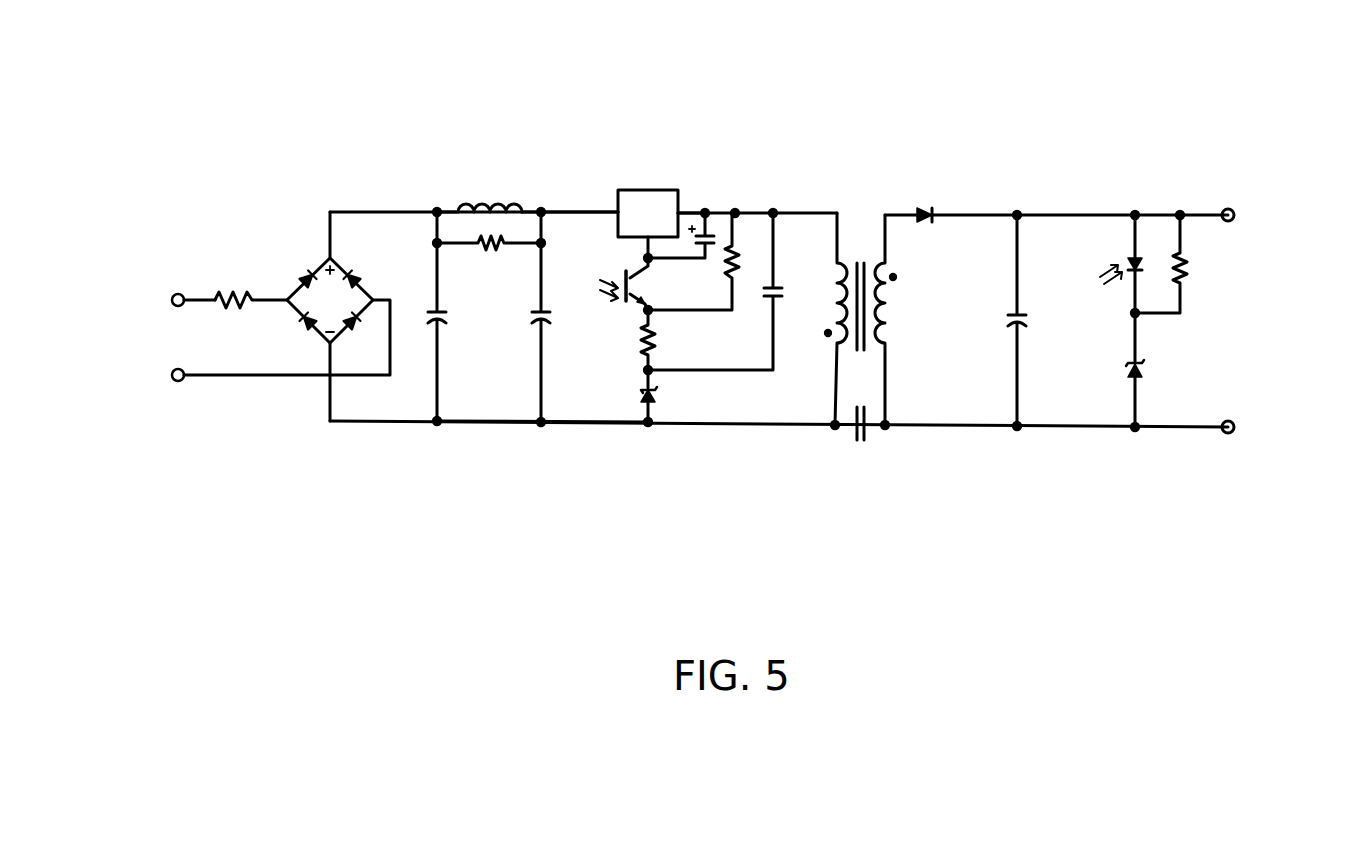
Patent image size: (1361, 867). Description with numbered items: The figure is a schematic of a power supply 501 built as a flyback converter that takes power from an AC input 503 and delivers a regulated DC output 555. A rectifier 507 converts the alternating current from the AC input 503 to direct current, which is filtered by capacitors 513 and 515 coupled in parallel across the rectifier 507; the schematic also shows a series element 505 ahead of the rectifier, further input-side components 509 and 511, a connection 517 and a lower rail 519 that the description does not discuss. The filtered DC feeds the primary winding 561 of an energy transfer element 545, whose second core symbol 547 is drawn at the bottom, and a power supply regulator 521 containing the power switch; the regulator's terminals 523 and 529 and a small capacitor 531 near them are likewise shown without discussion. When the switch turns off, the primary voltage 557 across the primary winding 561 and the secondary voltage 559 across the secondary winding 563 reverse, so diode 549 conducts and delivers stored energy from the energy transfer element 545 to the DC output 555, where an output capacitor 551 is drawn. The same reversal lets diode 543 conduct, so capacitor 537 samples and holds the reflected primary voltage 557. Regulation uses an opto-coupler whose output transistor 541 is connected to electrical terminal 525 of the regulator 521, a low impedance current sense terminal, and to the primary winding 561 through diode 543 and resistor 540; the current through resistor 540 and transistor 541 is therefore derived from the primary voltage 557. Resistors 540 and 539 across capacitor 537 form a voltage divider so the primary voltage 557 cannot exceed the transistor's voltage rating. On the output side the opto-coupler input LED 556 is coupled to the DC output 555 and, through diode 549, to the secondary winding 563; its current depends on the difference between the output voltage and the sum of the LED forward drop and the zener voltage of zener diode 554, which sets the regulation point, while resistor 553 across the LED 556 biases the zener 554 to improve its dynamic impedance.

The power supply 501 is at (1258, 57).
The AC input 503 is at (120, 308).
The input resistor 505 is at (225, 295).
The rectifier 507 is at (307, 262).
The inductor 509 is at (468, 205).
The resistor 511 is at (503, 258).
The capacitor 513 is at (445, 328).
The capacitor 515 is at (550, 328).
The node 517 is at (532, 205).
The ground rail 519 is at (550, 428).
The power supply regulator 521 is at (637, 182).
The drain terminal 523 is at (590, 198).
The electrical terminal 525 is at (618, 238).
The source terminal 529 is at (688, 192).
The capacitor 531 is at (713, 237).
The capacitor 537 is at (787, 293).
The resistor 539 is at (728, 268).
The resistor 540 is at (632, 347).
The output transistor 541 is at (620, 296).
The diode 543 is at (655, 407).
The energy transfer element 545 is at (858, 260).
The transformer core 547 is at (865, 442).
The diode 549 is at (933, 210).
The output capacitor 551 is at (1033, 332).
The resistor 553 is at (1193, 278).
The zener diode 554 is at (1142, 370).
The DC output 555 is at (1313, 292).
The input light emitting diode 556 is at (1097, 278).
The voltage V1 557 is at (828, 322).
The voltage V2 559 is at (933, 295).
The primary winding 561 is at (825, 348).
The secondary winding 563 is at (900, 353).